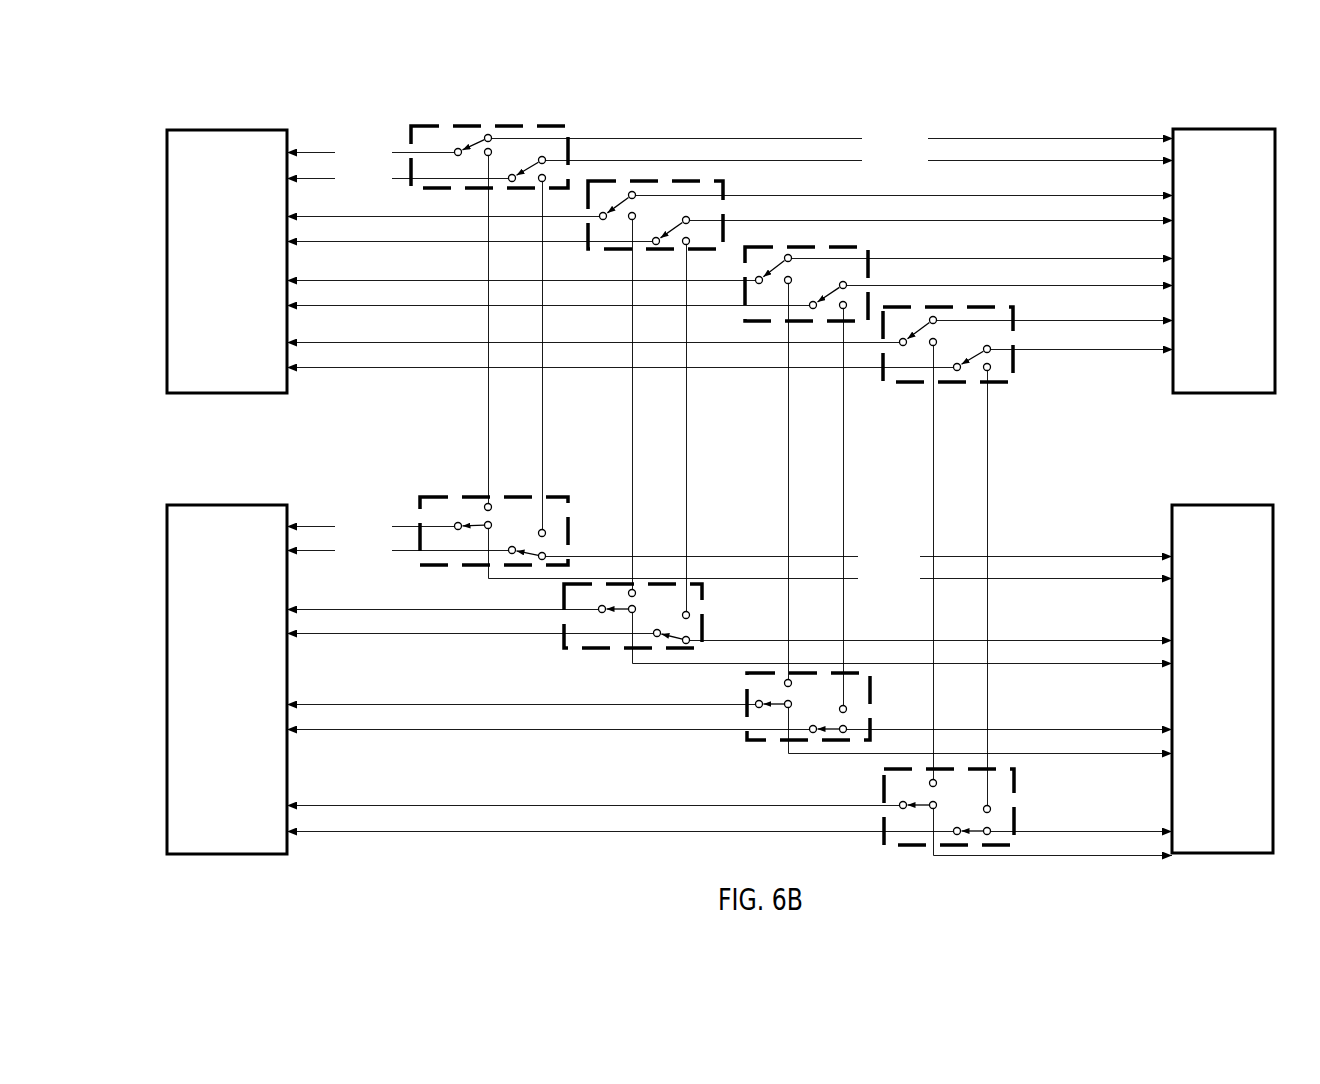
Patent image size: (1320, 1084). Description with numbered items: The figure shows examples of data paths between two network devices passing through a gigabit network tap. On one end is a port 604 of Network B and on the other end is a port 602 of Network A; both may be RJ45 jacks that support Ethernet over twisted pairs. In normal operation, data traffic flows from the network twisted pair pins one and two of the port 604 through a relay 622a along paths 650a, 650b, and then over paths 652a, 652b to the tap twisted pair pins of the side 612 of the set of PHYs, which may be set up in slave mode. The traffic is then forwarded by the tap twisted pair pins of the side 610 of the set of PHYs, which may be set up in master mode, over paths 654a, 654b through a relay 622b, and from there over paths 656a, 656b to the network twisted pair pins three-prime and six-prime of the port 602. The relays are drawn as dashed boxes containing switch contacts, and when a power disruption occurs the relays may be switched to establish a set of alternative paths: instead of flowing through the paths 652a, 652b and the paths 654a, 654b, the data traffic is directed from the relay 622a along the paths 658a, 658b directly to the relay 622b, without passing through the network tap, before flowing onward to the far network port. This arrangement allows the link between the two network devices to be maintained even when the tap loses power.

The side of set of PHYs 612 is at (227, 238).
The side of set of PHYs 610 is at (227, 654).
The port of Network B 604 is at (1208, 257).
The port of Network A 602 is at (1206, 680).
The relay 622a is at (489, 157).
The relay 622b is at (494, 531).
The path 652a is at (371, 152).
The path 652b is at (398, 178).
The path 654a is at (371, 526).
The path 654b is at (398, 550).
The path 650a is at (833, 137).
The path 650b is at (860, 159).
The path 656a is at (859, 555).
The path 656b is at (831, 559).
The path 658a is at (488, 330).
The path 658b is at (551, 356).